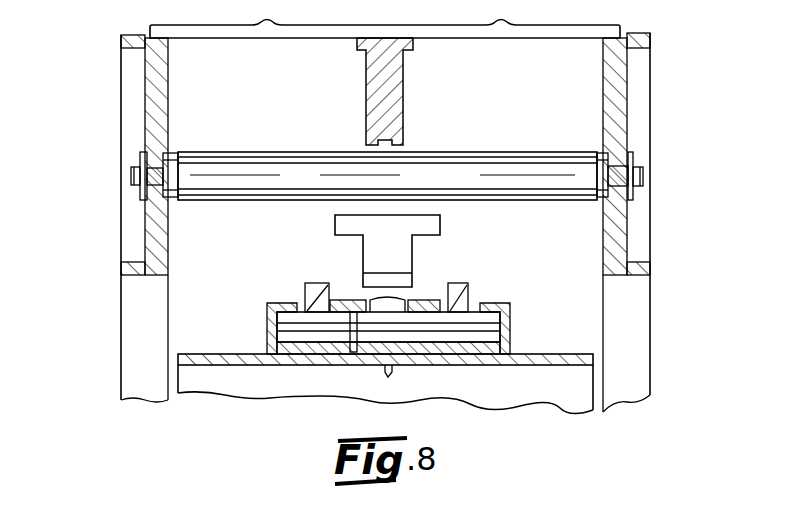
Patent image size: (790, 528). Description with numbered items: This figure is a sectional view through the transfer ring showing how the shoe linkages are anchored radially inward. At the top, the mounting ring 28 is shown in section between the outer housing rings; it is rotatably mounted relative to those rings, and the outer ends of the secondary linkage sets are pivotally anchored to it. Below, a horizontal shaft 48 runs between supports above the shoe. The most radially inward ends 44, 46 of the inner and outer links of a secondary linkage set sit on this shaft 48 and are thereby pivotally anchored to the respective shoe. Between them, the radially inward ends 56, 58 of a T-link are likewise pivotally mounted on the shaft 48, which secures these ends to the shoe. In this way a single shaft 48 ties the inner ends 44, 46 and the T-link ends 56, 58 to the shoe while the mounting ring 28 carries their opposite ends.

The mounting ring 28 is at (403, 89).
The radially inward end of inner link 44 is at (305, 292).
The radially inward end of outer link 46 is at (468, 290).
The shaft 48 is at (475, 323).
The radially inward end of T-link 56 is at (345, 305).
The radially inward end of T-link 58 is at (421, 305).